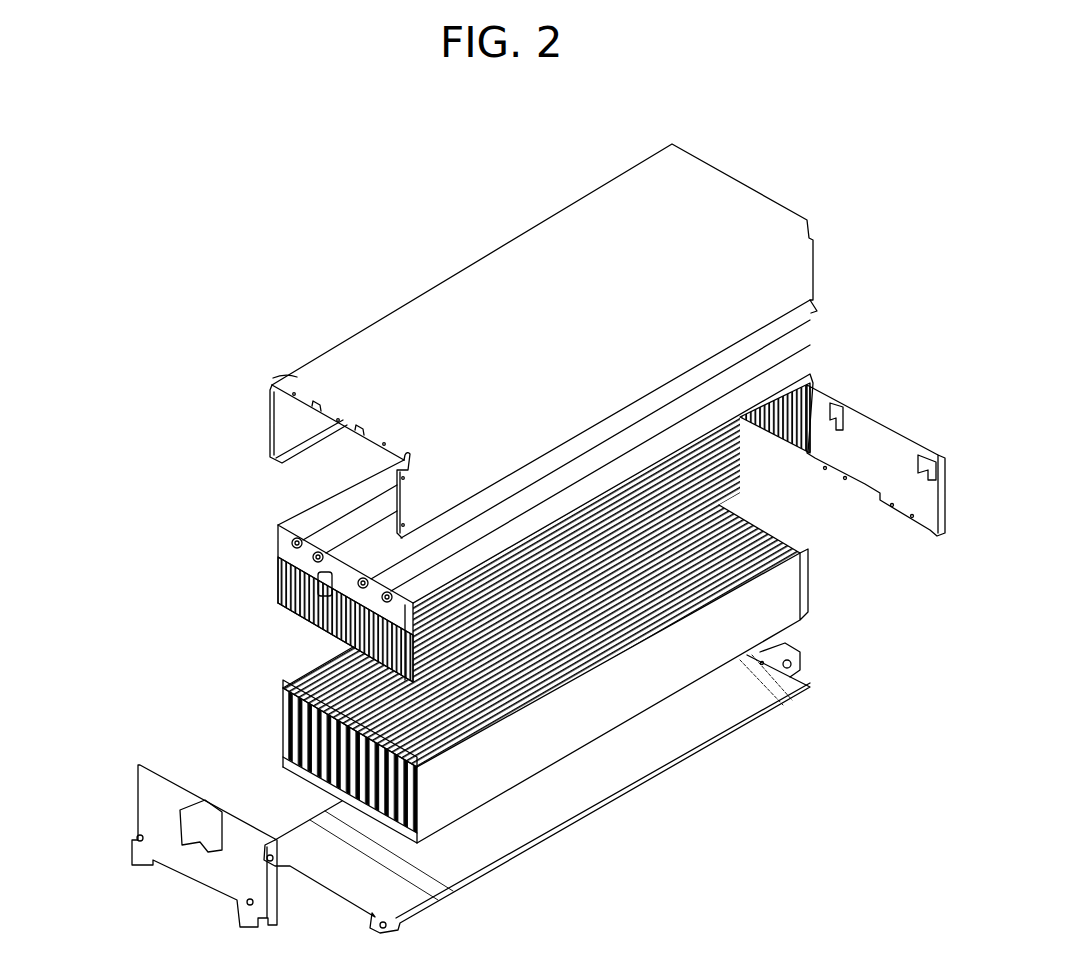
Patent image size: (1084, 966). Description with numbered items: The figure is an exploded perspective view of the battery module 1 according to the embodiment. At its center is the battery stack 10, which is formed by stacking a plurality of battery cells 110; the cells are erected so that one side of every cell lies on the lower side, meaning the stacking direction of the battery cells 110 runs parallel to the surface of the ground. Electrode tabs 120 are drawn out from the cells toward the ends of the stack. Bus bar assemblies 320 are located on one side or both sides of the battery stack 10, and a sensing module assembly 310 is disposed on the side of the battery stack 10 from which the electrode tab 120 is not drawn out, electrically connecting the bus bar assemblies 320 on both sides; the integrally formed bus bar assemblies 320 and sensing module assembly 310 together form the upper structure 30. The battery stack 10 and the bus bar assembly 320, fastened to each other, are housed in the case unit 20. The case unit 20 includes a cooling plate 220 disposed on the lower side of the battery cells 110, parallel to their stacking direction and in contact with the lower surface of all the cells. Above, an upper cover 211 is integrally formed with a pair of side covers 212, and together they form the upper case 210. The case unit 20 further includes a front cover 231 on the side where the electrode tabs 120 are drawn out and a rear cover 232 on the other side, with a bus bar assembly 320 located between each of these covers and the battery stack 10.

The battery module 1 is at (73, 169).
The battery stack 10 is at (820, 640).
The battery cells 110 is at (468, 800).
The electrode tab 120 is at (388, 823).
The case unit 20 is at (99, 718).
The upper case 210 is at (158, 510).
The upper cover 211 is at (266, 390).
The side covers 212 is at (280, 438).
The cooling plate 220 is at (337, 830).
The front cover 231 is at (188, 785).
The rear cover 232 is at (810, 383).
The upper structure 30 is at (196, 640).
The sensing module assembly 310 is at (282, 536).
The bus bar assemblies 320 is at (278, 604).